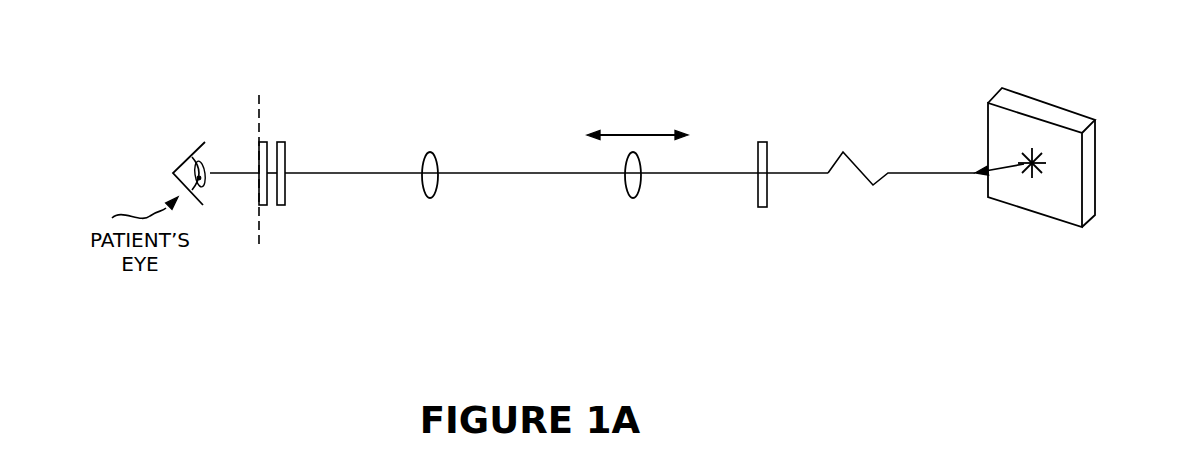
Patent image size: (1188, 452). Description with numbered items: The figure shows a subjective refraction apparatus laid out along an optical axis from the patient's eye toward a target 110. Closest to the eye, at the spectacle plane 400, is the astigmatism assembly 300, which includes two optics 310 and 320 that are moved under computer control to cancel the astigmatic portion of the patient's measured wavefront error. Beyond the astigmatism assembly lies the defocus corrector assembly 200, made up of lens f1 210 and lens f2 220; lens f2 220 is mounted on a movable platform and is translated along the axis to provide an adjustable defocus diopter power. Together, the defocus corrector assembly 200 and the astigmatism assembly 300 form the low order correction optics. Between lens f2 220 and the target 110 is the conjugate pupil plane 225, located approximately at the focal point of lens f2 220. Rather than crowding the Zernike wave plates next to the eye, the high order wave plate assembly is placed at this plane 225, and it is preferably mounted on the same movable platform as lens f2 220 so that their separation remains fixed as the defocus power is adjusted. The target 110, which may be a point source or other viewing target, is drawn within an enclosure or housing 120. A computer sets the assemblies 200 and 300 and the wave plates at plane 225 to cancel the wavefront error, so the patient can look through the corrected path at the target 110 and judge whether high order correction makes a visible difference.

The target 110 is at (1043, 142).
The display / source housing 120 is at (1079, 154).
The defocus corrector assembly 200 is at (576, 227).
The lens f1 210 is at (442, 144).
The lens f2 220 is at (668, 157).
The conjugate pupil plane 225 is at (763, 126).
The astigmatism assembly 300 is at (309, 193).
The optic 310 is at (272, 132).
The optic 320 is at (300, 151).
The spectacle plane 400 is at (270, 114).